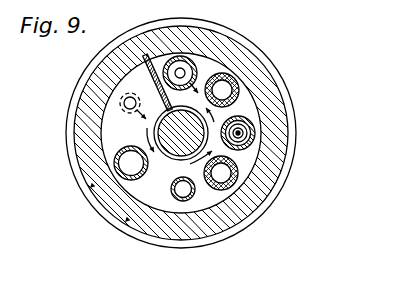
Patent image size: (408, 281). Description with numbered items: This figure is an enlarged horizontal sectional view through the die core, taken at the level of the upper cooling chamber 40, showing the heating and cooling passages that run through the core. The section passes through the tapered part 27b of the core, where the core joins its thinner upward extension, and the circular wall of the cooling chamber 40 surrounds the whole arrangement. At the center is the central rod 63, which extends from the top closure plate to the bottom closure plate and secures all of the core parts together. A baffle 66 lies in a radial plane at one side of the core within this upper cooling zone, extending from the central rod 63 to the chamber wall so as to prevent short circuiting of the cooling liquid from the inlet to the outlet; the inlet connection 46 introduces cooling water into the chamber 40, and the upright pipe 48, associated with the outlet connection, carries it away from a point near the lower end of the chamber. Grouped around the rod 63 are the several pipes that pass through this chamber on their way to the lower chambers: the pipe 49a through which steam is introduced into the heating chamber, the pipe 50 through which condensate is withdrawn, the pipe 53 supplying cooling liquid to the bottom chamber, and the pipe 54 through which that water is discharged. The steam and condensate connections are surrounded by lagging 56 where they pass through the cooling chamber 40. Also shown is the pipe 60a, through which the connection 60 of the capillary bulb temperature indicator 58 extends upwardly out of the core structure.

The tapered part 27b is at (280, 186).
The upper cooling chamber 40 is at (252, 100).
The lagging 56 is at (238, 76).
The baffle 66 is at (110, 79).
The central rod 63 is at (158, 126).
The inlet connection 46 is at (118, 100).
The upright pipe 48 is at (194, 62).
The pipe 49a is at (241, 92).
The pipe 60a is at (262, 108).
The connection 60 is at (254, 122).
The temperature indicator 58 is at (244, 136).
The pipe 50 is at (230, 174).
The pipe 53 is at (192, 201).
The pipe 54 is at (118, 165).